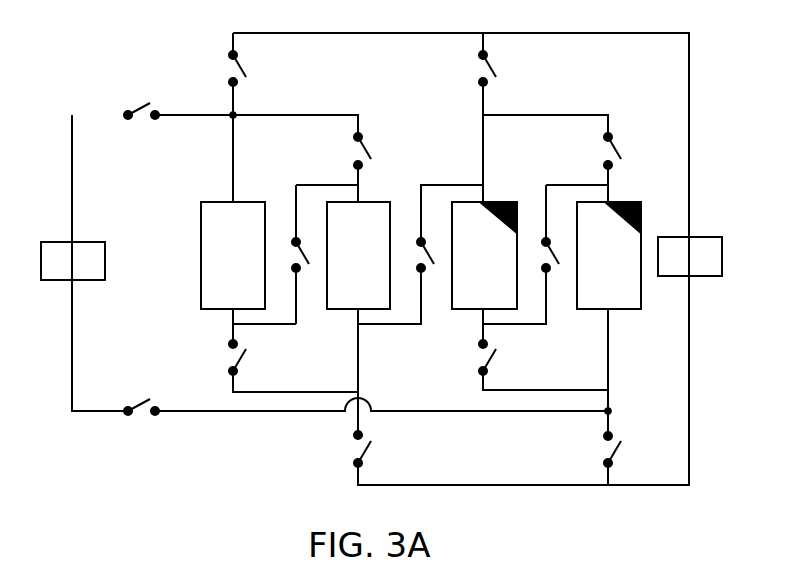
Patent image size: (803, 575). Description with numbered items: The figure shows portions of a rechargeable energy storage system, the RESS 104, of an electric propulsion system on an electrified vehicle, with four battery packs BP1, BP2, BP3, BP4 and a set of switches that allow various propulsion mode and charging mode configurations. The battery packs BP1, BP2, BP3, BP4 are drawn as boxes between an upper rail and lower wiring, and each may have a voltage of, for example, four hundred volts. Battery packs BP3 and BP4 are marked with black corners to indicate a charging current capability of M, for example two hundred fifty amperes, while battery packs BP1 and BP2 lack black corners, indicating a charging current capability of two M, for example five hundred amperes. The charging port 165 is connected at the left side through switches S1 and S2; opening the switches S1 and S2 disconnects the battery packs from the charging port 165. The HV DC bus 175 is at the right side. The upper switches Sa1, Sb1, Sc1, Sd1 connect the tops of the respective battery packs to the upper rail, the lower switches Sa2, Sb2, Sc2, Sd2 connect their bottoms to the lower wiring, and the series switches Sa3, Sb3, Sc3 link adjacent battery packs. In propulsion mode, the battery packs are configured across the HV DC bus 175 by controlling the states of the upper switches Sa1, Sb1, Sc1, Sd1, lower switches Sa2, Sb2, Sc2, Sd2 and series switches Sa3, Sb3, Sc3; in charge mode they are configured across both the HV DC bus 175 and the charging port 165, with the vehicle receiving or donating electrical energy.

The RESS 104 is at (423, 23).
The charging port 165 is at (56, 270).
The HV DC bus 175 is at (673, 266).
The battery pack BP1 is at (251, 267).
The battery pack BP2 is at (376, 267).
The battery pack BP3 is at (502, 267).
The battery pack BP4 is at (627, 267).
The switch S1 is at (141, 128).
The switch S2 is at (141, 424).
The upper switch Sa1 is at (218, 59).
The lower switch Sa2 is at (218, 357).
The series switch Sa3 is at (288, 255).
The upper switch Sb1 is at (343, 151).
The lower switch Sb2 is at (343, 449).
The series switch Sb3 is at (412, 255).
The upper switch Sc1 is at (469, 59).
The lower switch Sc2 is at (469, 357).
The series switch Sc3 is at (539, 255).
The upper switch Sd1 is at (593, 151).
The lower switch Sd2 is at (593, 449).